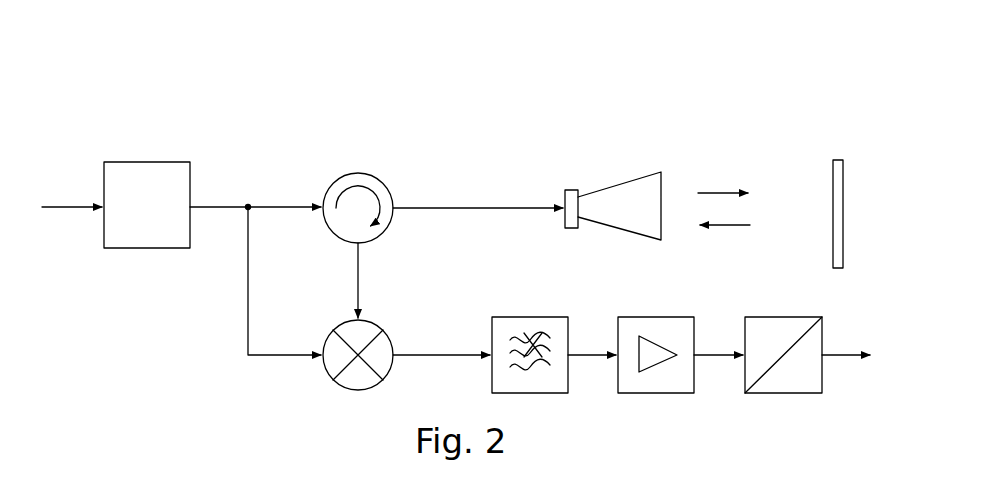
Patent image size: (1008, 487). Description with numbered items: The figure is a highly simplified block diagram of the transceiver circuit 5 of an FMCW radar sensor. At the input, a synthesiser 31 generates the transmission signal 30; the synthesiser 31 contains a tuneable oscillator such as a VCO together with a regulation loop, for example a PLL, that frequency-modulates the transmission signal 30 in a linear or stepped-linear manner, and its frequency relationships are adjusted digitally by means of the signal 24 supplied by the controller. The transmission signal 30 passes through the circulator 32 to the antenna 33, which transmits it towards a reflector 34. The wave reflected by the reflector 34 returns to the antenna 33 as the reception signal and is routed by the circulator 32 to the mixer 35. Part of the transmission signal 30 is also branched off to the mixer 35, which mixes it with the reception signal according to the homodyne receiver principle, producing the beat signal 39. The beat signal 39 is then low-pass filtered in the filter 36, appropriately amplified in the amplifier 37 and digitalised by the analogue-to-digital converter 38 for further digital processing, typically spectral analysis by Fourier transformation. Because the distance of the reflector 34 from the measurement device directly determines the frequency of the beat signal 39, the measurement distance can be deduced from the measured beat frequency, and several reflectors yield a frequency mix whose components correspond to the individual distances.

The transceiver circuit 5 is at (200, 68).
The signal 24 is at (85, 200).
The synthesiser 31 is at (162, 162).
The transmission signal 30 is at (297, 101).
The circulator 32 is at (368, 174).
The antenna 33 is at (638, 192).
The reflector 34 is at (845, 187).
The mixer 35 is at (340, 322).
The beat signal 39 is at (474, 252).
The filter 36 is at (553, 317).
The amplifier 37 is at (648, 317).
The analogue-to-digital converter 38 is at (780, 317).